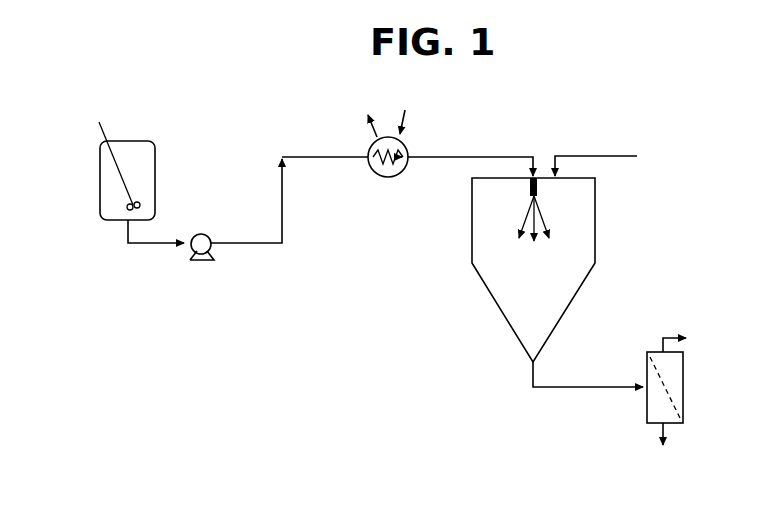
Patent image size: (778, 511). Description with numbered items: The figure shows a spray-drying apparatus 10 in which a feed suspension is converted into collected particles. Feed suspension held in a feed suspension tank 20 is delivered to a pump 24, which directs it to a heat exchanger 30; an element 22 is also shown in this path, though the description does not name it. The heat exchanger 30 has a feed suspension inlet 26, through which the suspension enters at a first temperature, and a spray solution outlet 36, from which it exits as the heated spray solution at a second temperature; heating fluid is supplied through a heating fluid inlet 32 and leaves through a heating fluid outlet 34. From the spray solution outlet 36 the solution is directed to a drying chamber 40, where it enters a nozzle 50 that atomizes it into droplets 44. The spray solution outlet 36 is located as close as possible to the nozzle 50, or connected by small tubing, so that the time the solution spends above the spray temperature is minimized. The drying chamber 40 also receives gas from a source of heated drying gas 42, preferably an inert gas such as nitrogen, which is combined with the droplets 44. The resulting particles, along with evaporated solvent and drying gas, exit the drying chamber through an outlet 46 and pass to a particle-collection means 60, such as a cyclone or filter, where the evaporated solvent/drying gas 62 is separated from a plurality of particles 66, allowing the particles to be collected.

The apparatus 10 is at (679, 175).
The feed suspension tank 20 is at (100, 188).
The agitator 22 is at (141, 203).
The pump 24 is at (197, 262).
The feed suspension inlet 26 is at (289, 188).
The heat exchanger 30 is at (377, 175).
The heating fluid inlet 32 is at (412, 111).
The heating fluid outlet 34 is at (361, 113).
The spray solution outlet 36 is at (470, 154).
The drying chamber 40 is at (595, 235).
The source of heated drying gas 42 is at (596, 154).
The droplets 44 is at (513, 225).
The outlet 46 is at (588, 374).
The nozzle 50 is at (529, 186).
The particle-collection means 60 is at (683, 393).
The evaporated solvent/drying gas 62 is at (692, 336).
The particles 66 is at (665, 451).